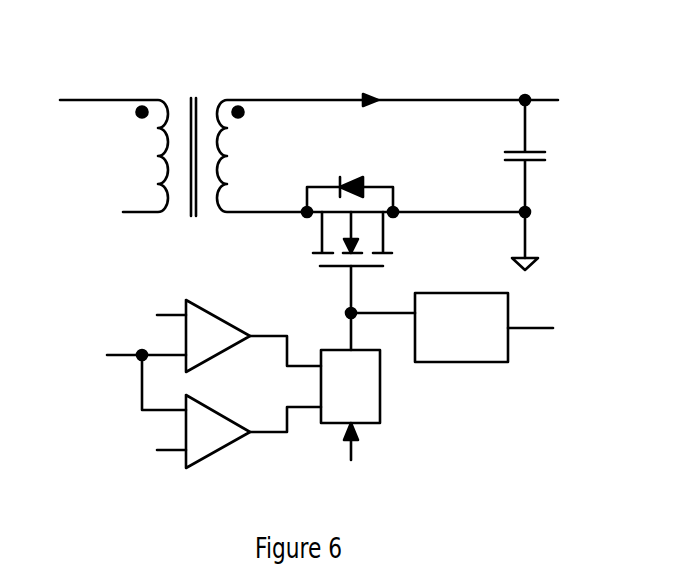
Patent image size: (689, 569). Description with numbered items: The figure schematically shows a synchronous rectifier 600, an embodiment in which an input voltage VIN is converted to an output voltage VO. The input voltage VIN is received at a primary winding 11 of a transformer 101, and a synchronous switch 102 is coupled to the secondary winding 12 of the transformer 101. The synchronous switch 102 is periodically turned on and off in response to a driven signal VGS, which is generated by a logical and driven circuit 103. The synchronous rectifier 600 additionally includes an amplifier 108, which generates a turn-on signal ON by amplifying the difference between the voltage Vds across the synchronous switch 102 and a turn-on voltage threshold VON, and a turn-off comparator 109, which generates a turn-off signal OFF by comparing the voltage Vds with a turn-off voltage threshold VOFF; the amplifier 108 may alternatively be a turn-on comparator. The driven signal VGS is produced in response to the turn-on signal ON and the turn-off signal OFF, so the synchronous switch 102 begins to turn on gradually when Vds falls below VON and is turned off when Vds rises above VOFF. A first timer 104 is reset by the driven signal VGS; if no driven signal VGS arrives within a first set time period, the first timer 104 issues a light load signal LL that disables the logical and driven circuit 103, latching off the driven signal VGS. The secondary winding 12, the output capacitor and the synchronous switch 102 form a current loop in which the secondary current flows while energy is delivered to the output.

The synchronous rectifier 600 is at (128, 52).
The transformer 101 is at (309, 179).
The primary winding 11 is at (136, 129).
The secondary winding 12 is at (248, 131).
The synchronous switch 102 is at (393, 218).
The logical and driven circuit 103 is at (350, 405).
The first timer 104 is at (462, 363).
The amplifier 108 is at (252, 336).
The turn-off comparator 109 is at (252, 431).